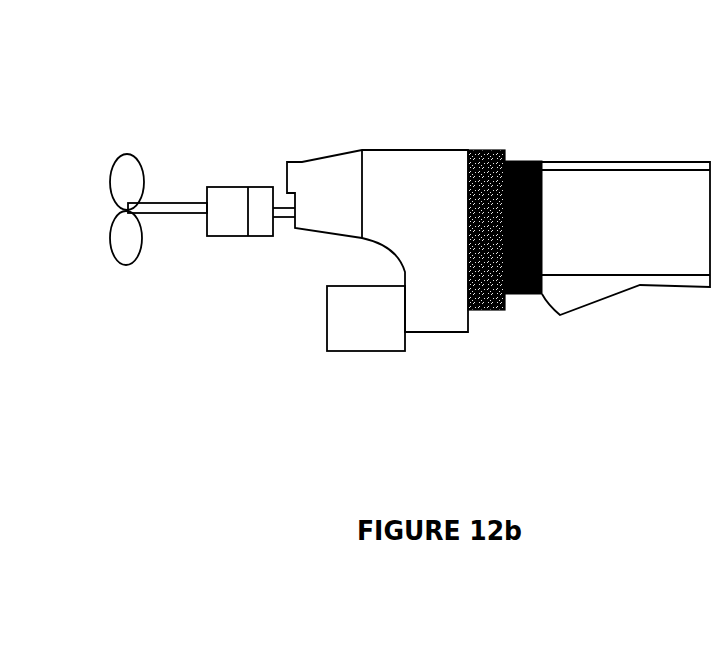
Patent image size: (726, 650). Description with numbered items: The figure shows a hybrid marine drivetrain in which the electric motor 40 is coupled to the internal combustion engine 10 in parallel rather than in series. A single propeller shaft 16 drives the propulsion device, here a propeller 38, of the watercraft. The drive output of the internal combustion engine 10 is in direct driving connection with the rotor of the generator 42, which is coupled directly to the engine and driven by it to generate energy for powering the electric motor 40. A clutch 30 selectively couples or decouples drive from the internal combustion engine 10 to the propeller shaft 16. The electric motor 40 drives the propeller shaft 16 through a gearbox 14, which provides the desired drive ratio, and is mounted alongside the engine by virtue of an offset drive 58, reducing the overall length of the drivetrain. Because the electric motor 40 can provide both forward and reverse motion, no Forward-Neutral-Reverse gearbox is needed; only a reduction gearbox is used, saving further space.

The internal combustion engine 10 is at (650, 183).
The gearbox 14 is at (288, 172).
The propeller shaft 16 is at (168, 213).
The clutch 30 is at (485, 148).
The propeller 38 is at (121, 265).
The electric motor 40 is at (327, 333).
The generator 42 is at (513, 149).
The offset drive 58 is at (433, 333).